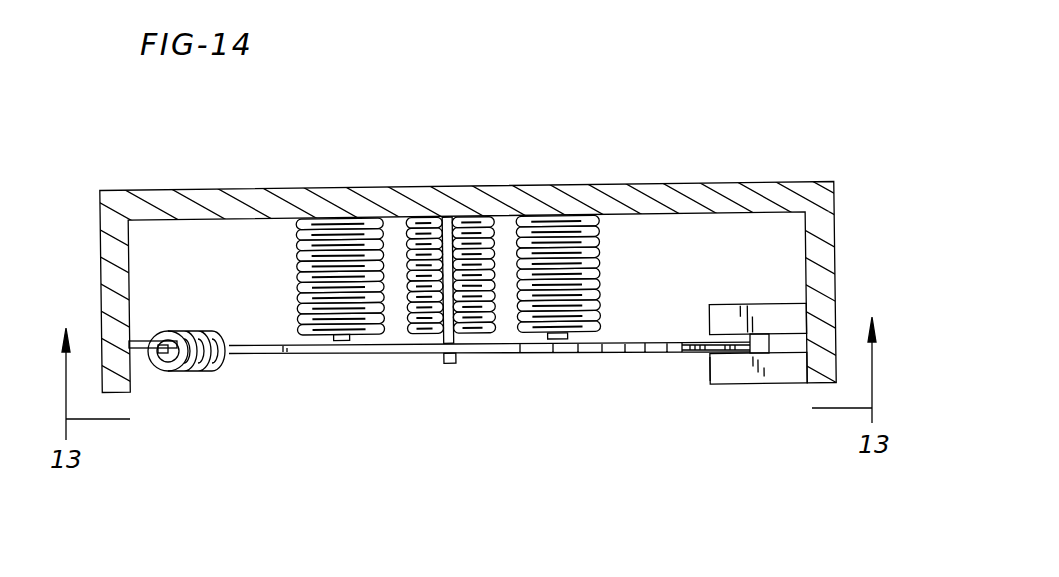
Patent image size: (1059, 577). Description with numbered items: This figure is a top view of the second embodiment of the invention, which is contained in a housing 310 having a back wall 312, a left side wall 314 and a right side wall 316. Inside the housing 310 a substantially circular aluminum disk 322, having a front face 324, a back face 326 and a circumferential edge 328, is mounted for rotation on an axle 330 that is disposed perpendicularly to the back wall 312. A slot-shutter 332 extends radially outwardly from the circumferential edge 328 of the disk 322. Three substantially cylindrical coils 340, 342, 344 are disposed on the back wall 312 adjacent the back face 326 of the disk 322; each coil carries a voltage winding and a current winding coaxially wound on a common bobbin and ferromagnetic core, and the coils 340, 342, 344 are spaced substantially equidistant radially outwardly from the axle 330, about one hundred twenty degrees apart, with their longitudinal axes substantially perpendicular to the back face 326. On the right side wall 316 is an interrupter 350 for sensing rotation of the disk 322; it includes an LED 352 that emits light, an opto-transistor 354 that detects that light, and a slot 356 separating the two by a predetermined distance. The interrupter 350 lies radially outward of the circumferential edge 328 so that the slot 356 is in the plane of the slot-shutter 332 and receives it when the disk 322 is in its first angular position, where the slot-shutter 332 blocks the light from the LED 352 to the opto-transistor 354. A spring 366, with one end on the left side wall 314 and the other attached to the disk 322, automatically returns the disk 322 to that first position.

The housing 310 is at (393, 168).
The back wall 312 is at (563, 185).
The left side wall 314 is at (100, 262).
The right side wall 316 is at (837, 212).
The aluminum disk 322 is at (375, 357).
The front face 324 is at (297, 361).
The back face 326 is at (283, 347).
The circumferential edge 328 is at (561, 354).
The axle 330 is at (453, 364).
The slot-shutter 332 is at (697, 336).
The coil 340 is at (297, 247).
The coil 342 is at (600, 253).
The coil 344 is at (468, 220).
The interrupter 350 is at (788, 385).
The LED 352 is at (712, 368).
The opto-transistor 354 is at (720, 322).
The slot 356 is at (763, 342).
The spring 366 is at (192, 375).